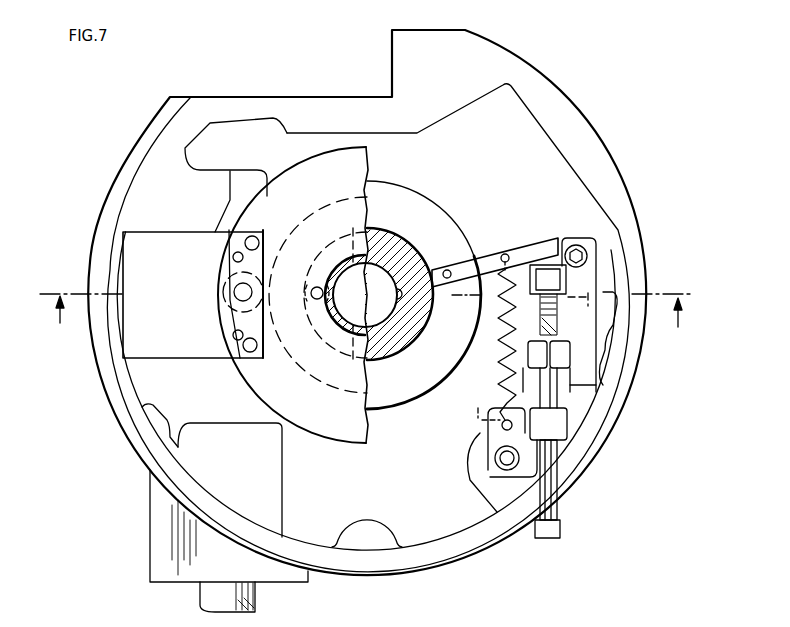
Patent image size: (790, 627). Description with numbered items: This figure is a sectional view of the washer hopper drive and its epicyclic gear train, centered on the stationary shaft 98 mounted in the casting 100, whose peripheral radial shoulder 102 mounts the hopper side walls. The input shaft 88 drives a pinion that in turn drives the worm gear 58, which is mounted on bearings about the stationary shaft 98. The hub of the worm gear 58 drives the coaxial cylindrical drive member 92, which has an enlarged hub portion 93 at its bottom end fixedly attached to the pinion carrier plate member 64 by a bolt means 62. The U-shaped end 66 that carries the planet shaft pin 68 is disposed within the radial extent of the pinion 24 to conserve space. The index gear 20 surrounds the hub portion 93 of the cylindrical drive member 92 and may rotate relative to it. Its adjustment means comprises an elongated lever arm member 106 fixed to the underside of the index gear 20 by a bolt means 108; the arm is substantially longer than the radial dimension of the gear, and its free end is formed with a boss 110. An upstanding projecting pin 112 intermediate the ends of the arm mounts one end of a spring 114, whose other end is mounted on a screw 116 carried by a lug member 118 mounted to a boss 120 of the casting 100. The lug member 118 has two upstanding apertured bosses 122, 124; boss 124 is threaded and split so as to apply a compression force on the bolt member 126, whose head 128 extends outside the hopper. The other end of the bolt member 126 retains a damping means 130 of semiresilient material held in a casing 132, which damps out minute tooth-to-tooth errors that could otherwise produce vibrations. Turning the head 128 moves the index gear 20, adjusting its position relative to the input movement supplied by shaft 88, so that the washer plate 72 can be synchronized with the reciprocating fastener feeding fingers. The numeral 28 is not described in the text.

The index gear 20 is at (318, 380).
The pinion 24 is at (222, 292).
The bearing 28 is at (227, 278).
The worm gear 58 is at (421, 200).
The bolt means 62 is at (316, 286).
The pinion carrier plate member 64 is at (366, 168).
The U-shaped end 66 is at (238, 343).
The planet shaft pin 68 is at (243, 292).
The washer plate 72 is at (466, 262).
The input shaft 88 is at (258, 600).
The cylindrical drive member 92 is at (336, 308).
The enlarged hub portion 93 is at (407, 254).
The stationary shaft 98 is at (390, 312).
The casting 100 is at (468, 526).
The peripheral radial shoulder 102 is at (645, 236).
The lever arm member 106 is at (545, 248).
The bolt means 108 is at (452, 290).
The boss 110 is at (570, 240).
The projecting pin 112 is at (505, 250).
The spring 114 is at (495, 355).
The screw 116 is at (500, 424).
The lug member 118 is at (497, 470).
The boss 120 is at (473, 470).
The apertured boss 122 is at (560, 450).
The apertured boss 124 is at (572, 368).
The bolt member 126 is at (569, 416).
The head 128 is at (560, 530).
The damping means 130 is at (600, 292).
The casing 132 is at (570, 265).